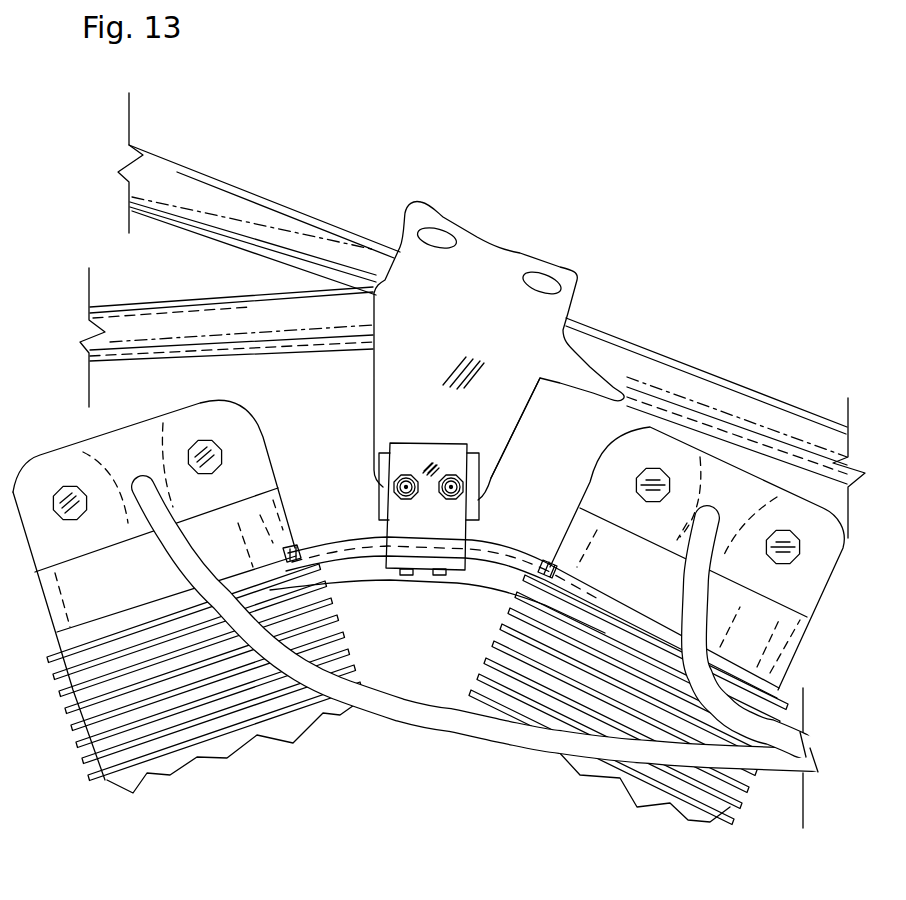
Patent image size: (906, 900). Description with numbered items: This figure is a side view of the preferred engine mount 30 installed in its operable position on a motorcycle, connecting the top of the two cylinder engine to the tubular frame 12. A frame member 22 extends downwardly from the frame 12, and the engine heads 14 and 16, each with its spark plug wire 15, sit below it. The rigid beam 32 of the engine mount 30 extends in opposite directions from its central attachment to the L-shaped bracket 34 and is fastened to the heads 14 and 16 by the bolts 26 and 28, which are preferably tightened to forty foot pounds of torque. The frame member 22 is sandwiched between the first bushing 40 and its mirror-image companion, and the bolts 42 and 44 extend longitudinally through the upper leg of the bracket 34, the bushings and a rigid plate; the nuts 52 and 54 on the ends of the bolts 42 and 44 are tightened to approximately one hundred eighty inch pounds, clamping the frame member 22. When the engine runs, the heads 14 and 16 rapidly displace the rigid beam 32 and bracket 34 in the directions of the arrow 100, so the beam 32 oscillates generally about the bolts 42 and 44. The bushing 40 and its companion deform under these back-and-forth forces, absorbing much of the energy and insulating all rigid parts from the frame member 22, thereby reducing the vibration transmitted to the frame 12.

The frame 12 is at (635, 358).
The engine head 14 is at (790, 653).
The spark plug wire 15 is at (555, 452).
The engine head 16 is at (62, 627).
The frame member 22 is at (381, 352).
The bolt 26 is at (552, 558).
The bolt 28 is at (293, 547).
The engine mount 30 is at (458, 530).
The beam 32 is at (478, 557).
The L-shaped bracket 34 is at (412, 540).
The first bushing 40 is at (484, 468).
The bolt 42 is at (453, 473).
The bolt 44 is at (399, 473).
The nut 52 is at (446, 476).
The nut 54 is at (387, 484).
The arrow 100 is at (474, 650).